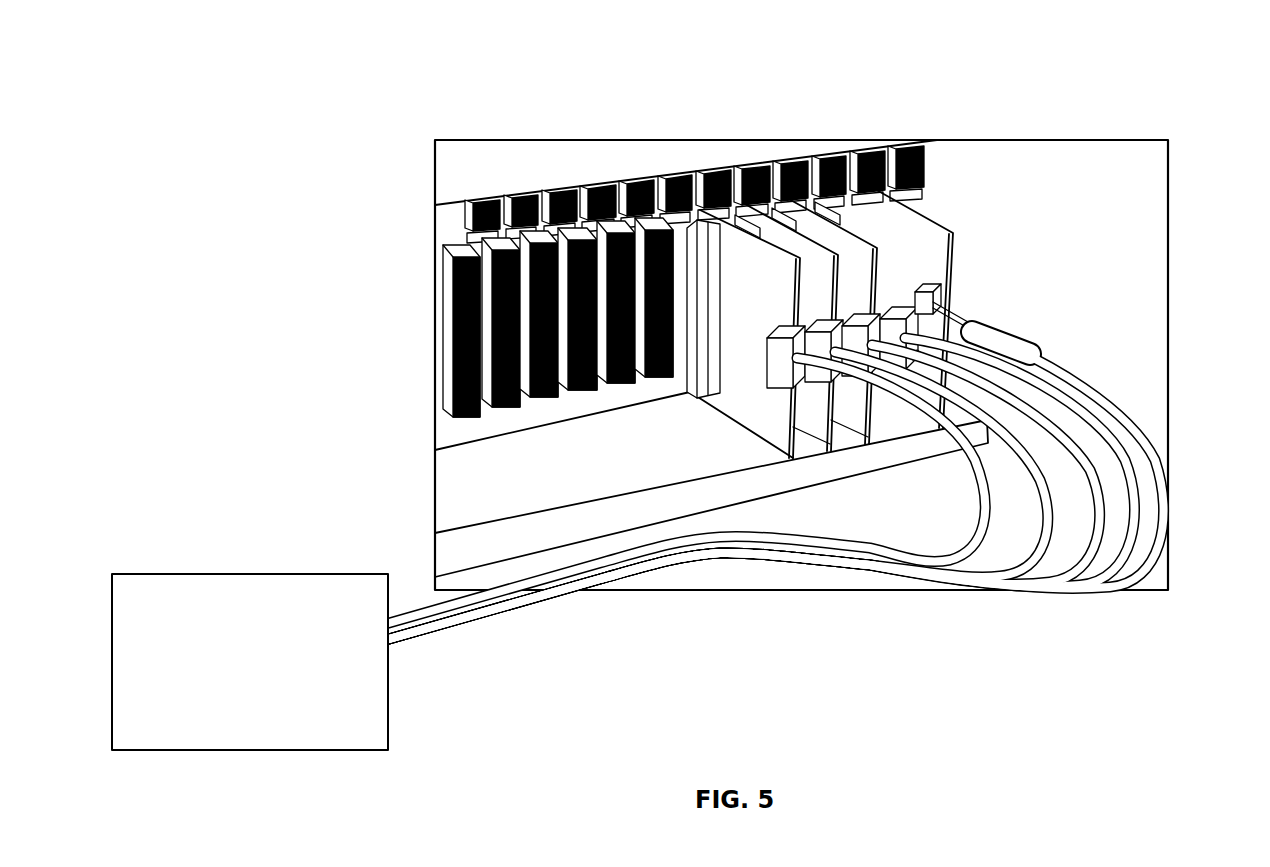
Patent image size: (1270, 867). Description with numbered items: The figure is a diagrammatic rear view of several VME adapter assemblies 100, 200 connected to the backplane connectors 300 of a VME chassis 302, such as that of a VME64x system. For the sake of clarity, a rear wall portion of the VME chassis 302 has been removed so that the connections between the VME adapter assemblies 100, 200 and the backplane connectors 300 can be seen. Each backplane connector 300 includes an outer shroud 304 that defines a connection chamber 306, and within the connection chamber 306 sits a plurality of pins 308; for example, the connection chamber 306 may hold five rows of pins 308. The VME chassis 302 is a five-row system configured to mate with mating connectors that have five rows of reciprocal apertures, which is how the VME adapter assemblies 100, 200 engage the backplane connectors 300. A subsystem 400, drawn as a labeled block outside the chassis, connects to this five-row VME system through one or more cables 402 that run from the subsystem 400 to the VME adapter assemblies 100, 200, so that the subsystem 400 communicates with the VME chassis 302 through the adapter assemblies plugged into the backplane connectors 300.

The VME adapter assembly 100 is at (956, 221).
The VME adapter assembly 200 is at (880, 200).
The backplane connector 300 is at (577, 187).
The VME chassis 302 is at (697, 88).
The outer shroud 304 is at (533, 192).
The connection chamber 306 is at (550, 292).
The pins 308 is at (613, 183).
The subsystem 400 is at (250, 750).
The cables 402 is at (1115, 440).